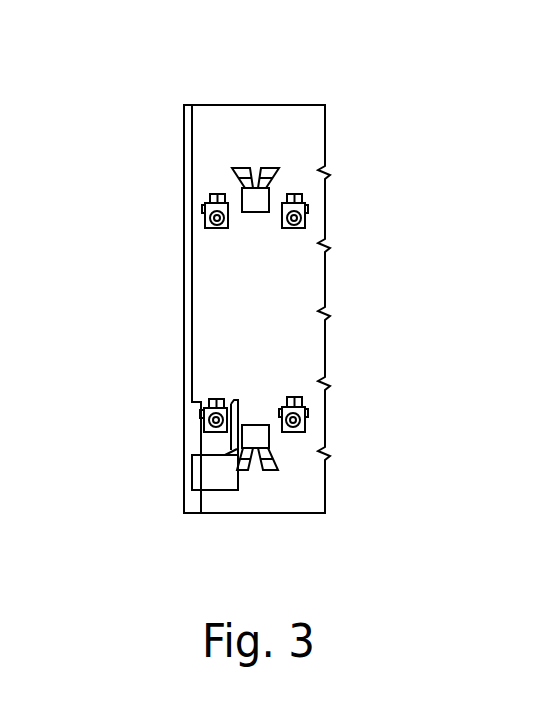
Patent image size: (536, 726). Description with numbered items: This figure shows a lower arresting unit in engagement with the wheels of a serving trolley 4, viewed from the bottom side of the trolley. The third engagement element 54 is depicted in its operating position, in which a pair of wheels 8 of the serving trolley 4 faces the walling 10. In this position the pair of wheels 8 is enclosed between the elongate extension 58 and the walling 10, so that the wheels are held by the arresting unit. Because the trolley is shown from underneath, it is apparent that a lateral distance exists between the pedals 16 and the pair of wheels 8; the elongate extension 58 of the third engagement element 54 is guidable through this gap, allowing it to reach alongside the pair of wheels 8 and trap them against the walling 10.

The serving trolley 4 is at (310, 143).
The walling 10 is at (192, 287).
The pedals 16 is at (257, 150).
The pair of wheels 8 is at (210, 398).
The elongate extension 58 is at (236, 402).
The third engagement element 54 is at (216, 485).